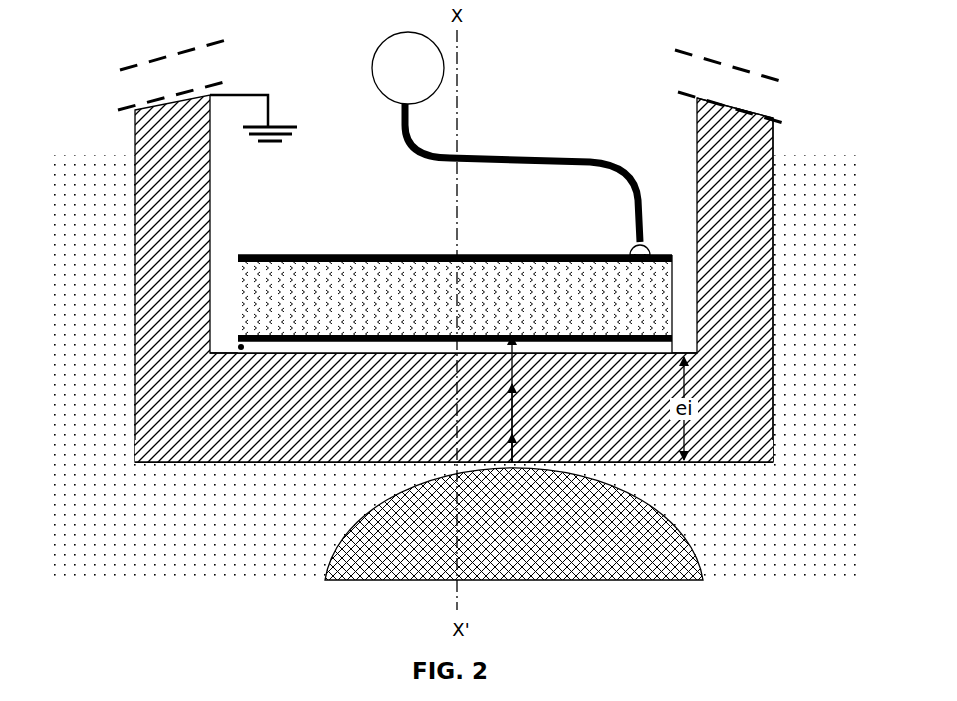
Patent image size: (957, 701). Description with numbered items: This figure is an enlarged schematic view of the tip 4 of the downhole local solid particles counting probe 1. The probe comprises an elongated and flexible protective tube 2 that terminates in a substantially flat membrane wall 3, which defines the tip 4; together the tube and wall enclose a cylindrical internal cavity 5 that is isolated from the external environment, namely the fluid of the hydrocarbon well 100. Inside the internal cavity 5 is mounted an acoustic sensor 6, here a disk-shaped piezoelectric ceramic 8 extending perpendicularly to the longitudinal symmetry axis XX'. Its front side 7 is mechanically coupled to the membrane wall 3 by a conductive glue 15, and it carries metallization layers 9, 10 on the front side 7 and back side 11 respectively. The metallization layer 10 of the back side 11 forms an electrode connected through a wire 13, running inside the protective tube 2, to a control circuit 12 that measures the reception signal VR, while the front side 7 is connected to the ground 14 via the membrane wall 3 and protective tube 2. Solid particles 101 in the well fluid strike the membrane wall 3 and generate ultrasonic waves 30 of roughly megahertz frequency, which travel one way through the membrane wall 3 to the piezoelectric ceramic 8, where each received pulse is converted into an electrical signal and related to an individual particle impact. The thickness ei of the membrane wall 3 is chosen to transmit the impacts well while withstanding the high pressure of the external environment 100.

The downhole local solid particles counting probe 1 is at (98, 72).
The elongated and flexible protective tube 2 is at (773, 160).
The membrane wall 3 is at (250, 462).
The tip 4 is at (133, 432).
The internal cavity 5 is at (453, 223).
The acoustic sensor 6 is at (370, 218).
The front side 7 is at (262, 334).
The piezoelectric ceramic 8 is at (455, 298).
The metallization layer 9 is at (238, 340).
The metallization layer 10 is at (486, 255).
The back side 11 is at (300, 255).
The control circuit 12 is at (438, 98).
The wire 13 is at (505, 158).
The ground 14 is at (268, 95).
The conductive glue 15 is at (672, 353).
The ultrasonic waves 30 is at (530, 405).
The hydrocarbon well 100 is at (456, 367).
The solid particles 101 is at (454, 510).